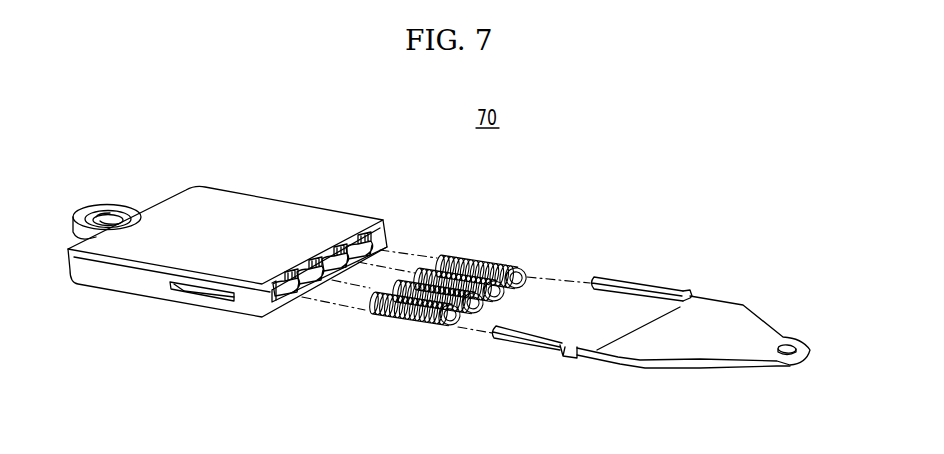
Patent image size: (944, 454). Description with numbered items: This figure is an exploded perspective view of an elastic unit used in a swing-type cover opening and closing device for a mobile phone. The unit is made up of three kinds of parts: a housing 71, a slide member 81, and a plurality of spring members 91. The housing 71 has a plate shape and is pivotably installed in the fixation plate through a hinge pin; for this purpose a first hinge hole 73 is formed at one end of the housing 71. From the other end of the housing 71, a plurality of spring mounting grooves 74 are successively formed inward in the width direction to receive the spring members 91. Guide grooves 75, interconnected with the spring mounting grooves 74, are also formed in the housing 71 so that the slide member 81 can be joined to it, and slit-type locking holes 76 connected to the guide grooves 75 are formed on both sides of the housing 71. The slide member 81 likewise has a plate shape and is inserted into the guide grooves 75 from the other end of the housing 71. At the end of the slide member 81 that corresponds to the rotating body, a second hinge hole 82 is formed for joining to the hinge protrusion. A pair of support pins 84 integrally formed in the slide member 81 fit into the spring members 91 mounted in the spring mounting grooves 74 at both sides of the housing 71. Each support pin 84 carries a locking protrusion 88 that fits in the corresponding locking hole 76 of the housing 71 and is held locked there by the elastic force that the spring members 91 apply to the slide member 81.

The housing 71 is at (287, 218).
The first hinge hole 73 is at (110, 220).
The spring mounting grooves 74 is at (293, 310).
The guide grooves 75 is at (392, 237).
The locking holes 76 is at (203, 292).
The slide member 81 is at (656, 327).
The second hinge hole 82 is at (787, 347).
The support pins 84 is at (623, 285).
The locking protrusion 88 is at (687, 290).
The spring members 91 is at (403, 320).